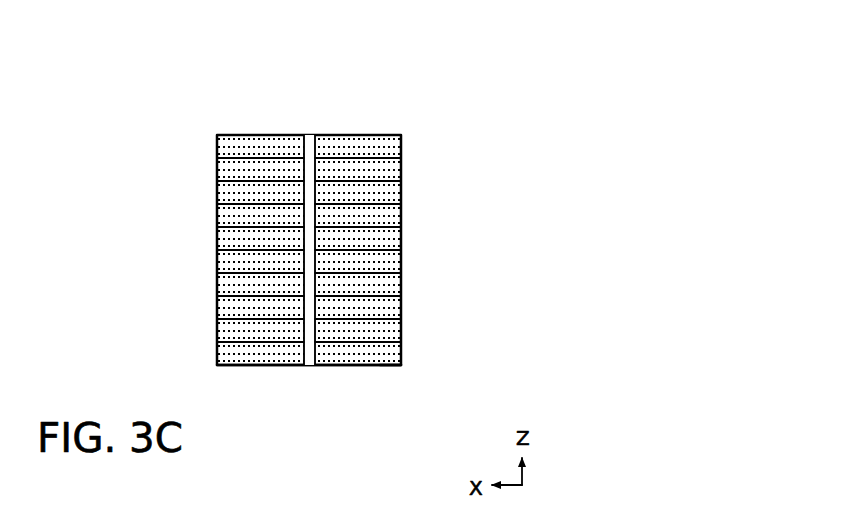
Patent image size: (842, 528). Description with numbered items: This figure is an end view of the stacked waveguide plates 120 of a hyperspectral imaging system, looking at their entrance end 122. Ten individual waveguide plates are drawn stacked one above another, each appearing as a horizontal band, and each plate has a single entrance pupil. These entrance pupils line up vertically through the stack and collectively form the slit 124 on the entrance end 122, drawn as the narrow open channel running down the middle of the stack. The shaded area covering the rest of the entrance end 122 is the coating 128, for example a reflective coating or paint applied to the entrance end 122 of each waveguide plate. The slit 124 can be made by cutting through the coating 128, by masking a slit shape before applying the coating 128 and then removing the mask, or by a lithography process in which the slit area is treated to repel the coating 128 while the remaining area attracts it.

The stacked waveguide plates 120 is at (105, 188).
The entrance end 122 is at (213, 354).
The slit 124 is at (318, 127).
The coating 128 is at (390, 370).